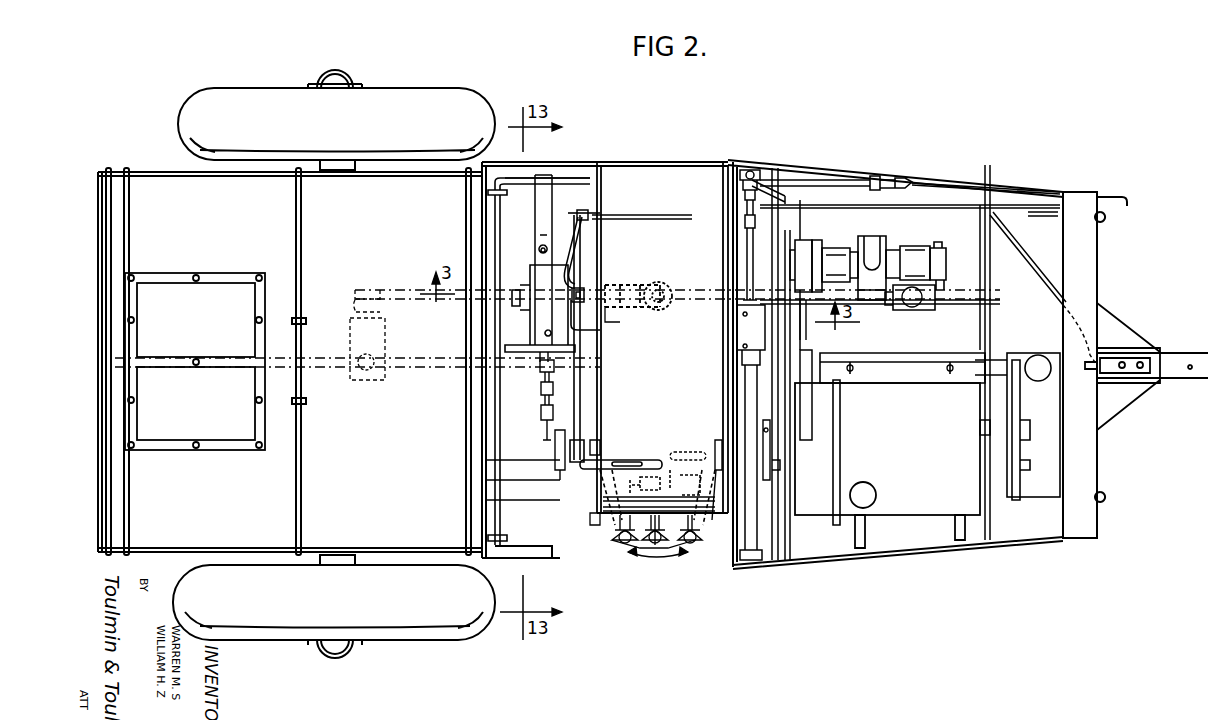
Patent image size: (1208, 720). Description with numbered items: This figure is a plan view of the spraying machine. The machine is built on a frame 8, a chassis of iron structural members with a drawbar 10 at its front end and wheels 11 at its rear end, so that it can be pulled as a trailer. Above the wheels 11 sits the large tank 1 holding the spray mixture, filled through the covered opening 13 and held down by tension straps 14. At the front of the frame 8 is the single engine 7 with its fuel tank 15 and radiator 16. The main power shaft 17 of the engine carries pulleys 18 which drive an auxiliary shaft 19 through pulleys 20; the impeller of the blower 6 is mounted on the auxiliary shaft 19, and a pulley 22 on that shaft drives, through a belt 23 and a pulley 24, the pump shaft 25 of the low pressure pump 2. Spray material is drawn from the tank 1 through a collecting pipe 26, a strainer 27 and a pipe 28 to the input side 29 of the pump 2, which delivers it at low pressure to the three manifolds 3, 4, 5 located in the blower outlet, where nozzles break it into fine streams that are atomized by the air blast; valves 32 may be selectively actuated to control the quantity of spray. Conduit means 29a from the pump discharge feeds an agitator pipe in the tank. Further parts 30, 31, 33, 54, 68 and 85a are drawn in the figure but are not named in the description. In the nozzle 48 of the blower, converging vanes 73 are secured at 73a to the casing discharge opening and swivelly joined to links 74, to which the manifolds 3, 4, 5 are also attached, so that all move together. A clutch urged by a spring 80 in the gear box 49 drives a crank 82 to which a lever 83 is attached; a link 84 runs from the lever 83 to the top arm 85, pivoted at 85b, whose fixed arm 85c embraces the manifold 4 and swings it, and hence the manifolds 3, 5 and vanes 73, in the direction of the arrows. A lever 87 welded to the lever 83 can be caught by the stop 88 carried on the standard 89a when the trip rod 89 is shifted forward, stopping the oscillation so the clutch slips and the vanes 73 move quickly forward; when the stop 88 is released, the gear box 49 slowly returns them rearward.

The tank 1 is at (442, 426).
The low pressure pump 2 is at (892, 252).
The manifold 3 is at (622, 542).
The manifold 4 is at (655, 545).
The manifold 5 is at (548, 358).
The blower 6 is at (702, 172).
The engine 7 is at (914, 352).
The frame 8 is at (526, 258).
The drawbar 10 is at (1190, 360).
The wheels 11 is at (412, 622).
The covered opening 13 is at (230, 292).
The tension straps 14 is at (130, 225).
The fuel tank 15 is at (932, 444).
The radiator 16 is at (1017, 426).
The main power shaft 17 is at (796, 438).
The pulleys 18 is at (788, 470).
The auxiliary shaft 19 is at (806, 318).
The pulleys 20 is at (772, 334).
The pulley 22 is at (820, 365).
The belt 23 is at (805, 240).
The pulley 24 is at (815, 252).
The pump shaft 25 is at (826, 260).
The collecting pipe 26 is at (420, 288).
The strainer 27 is at (920, 298).
The pipe 28 is at (946, 264).
The input side of pump 29 is at (330, 364).
The conduit means 29a is at (563, 182).
The pump 30 is at (870, 258).
The pipe 31 is at (830, 180).
The valves 32 is at (756, 182).
The lever 33 is at (754, 470).
The nozzle 48 is at (600, 525).
The gear box 49 is at (540, 303).
The column 54 is at (543, 260).
The turnbuckle 68 is at (538, 406).
The vanes 73 is at (714, 522).
The vane securing points 73a is at (597, 456).
The links 74 is at (620, 535).
The spring 80 is at (572, 464).
The crank 82 is at (578, 330).
The lever 83 is at (584, 292).
The link 84 is at (580, 378).
The top arm 85 is at (605, 480).
The stem 85a is at (657, 545).
The pivot 85b is at (665, 455).
The arm 85c is at (657, 567).
The lever 87 is at (582, 270).
The stop 88 is at (588, 214).
The trip rod 89 is at (690, 218).
The standard 89a is at (578, 212).